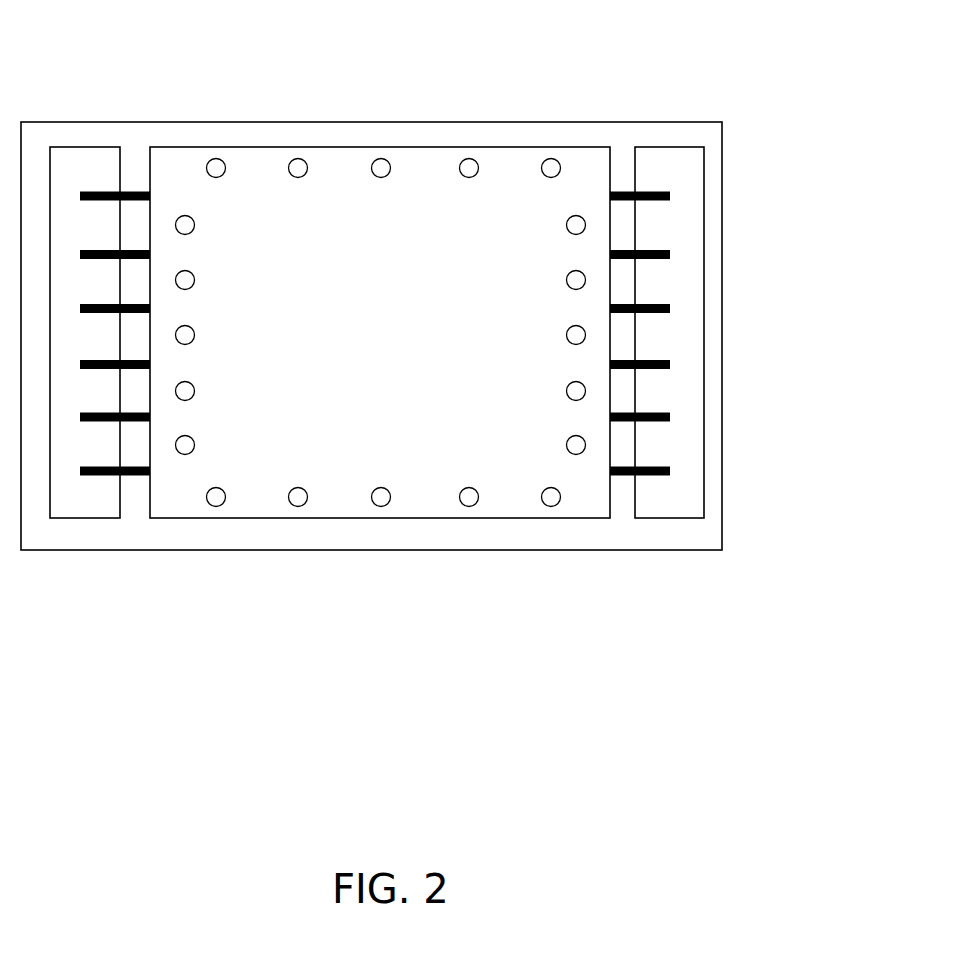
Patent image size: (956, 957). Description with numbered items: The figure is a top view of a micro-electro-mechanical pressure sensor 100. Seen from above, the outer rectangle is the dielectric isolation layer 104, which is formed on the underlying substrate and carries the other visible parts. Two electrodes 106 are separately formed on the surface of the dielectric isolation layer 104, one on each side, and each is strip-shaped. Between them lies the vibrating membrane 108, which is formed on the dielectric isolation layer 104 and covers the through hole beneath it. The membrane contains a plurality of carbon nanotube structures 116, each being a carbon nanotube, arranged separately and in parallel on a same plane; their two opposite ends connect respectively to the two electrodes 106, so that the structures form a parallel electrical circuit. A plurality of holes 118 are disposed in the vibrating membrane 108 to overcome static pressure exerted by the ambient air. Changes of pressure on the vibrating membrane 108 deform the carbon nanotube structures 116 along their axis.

The pressure sensor 100 is at (377, 22).
The dielectric isolation layer 104 is at (623, 138).
The electrodes 106 is at (685, 238).
The vibrating membrane 108 is at (505, 475).
The carbon nanotube structures 116 is at (653, 466).
The holes 118 is at (298, 159).